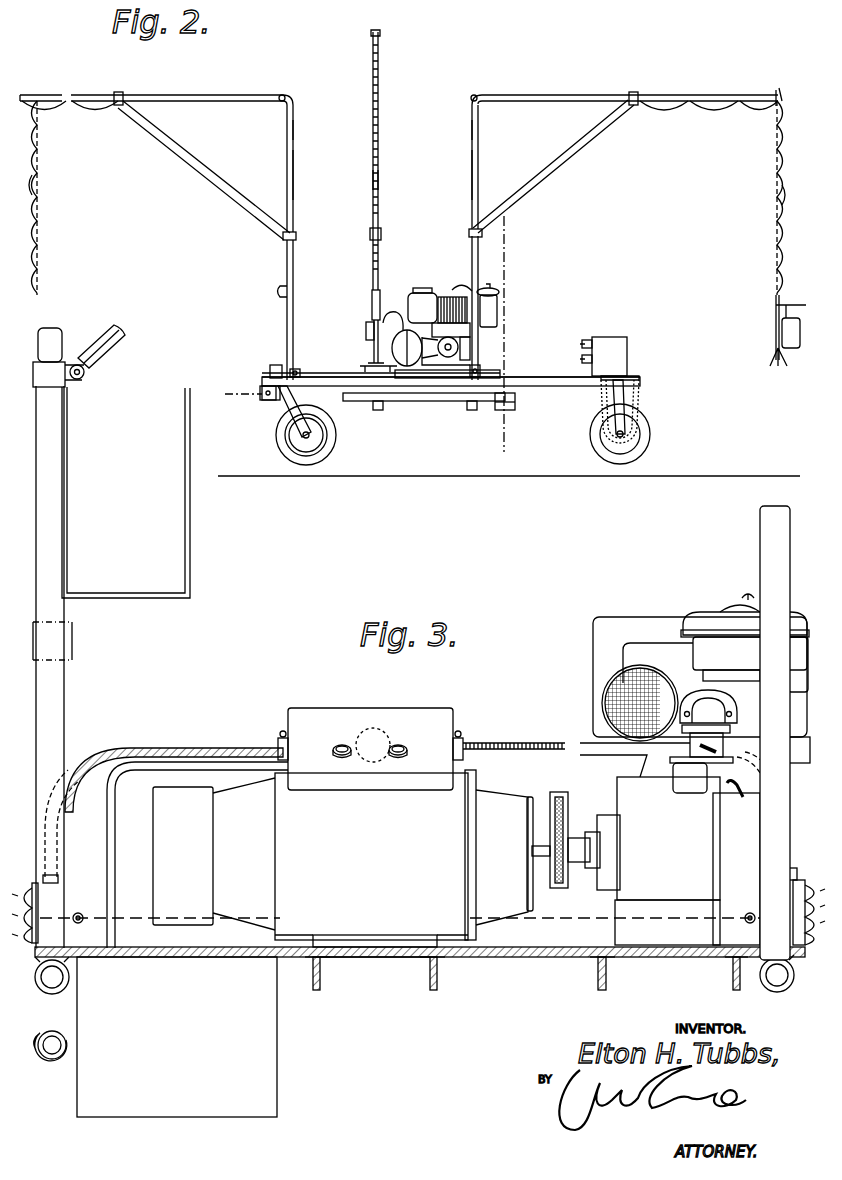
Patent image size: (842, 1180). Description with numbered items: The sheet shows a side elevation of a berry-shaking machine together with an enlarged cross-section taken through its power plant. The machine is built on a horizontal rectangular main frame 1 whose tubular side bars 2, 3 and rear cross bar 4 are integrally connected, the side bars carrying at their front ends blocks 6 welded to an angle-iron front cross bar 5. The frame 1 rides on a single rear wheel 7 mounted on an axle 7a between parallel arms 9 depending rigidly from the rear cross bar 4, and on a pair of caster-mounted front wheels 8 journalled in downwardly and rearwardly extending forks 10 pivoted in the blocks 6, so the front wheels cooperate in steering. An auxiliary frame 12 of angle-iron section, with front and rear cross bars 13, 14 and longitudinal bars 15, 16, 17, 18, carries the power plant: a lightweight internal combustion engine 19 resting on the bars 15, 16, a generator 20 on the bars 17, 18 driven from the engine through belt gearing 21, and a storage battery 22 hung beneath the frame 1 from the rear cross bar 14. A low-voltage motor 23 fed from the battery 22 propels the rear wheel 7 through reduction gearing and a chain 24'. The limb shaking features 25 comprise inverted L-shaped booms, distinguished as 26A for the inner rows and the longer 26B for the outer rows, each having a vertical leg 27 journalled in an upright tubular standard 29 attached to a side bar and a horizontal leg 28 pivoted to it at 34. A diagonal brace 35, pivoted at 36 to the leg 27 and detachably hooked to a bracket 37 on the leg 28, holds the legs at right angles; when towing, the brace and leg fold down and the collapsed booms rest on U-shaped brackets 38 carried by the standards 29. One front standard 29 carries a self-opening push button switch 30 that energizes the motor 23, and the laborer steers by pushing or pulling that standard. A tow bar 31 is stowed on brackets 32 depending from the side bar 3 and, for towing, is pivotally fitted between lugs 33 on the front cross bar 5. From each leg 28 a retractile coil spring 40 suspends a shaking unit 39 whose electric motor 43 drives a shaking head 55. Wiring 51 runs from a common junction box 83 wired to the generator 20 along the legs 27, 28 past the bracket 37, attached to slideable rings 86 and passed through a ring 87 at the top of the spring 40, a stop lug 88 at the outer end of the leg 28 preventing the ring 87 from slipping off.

In FIG. 2, the main frame 1 is at (524, 378).
In FIG. 3, the side bar 2 is at (777, 993).
In FIG. 2, the side bar 3 is at (508, 221).
In FIG. 3, the side bar 3 is at (70, 980).
In FIG. 2, the rear cross bar 4 is at (621, 377).
In FIG. 2, the front cross bar 5 is at (270, 383).
In FIG. 2, the block 6 is at (270, 374).
In FIG. 2, the rear wheel 7 is at (651, 430).
In FIG. 2, the axle 7a is at (624, 437).
In FIG. 2, the front wheel 8 is at (276, 458).
In FIG. 2, the arm 9 is at (640, 403).
In FIG. 2, the fork 10 is at (286, 426).
In FIG. 3, the auxiliary frame 12 is at (375, 979).
In FIG. 2, the front cross bar 13 is at (541, 378).
In FIG. 3, the front cross bar 13 is at (178, 958).
In FIG. 3, the rear cross bar 14 is at (523, 958).
In FIG. 3, the longitudinal bar 15 is at (733, 988).
In FIG. 3, the longitudinal bar 16 is at (606, 988).
In FIG. 3, the longitudinal bar 17 is at (431, 988).
In FIG. 3, the longitudinal bar 18 is at (320, 988).
In FIG. 2, the internal combustion engine 19 is at (440, 296).
In FIG. 3, the internal combustion engine 19 is at (658, 617).
In FIG. 2, the generator 20 is at (400, 345).
In FIG. 3, the generator 20 is at (404, 858).
In FIG. 2, the belt gearing 21 is at (422, 305).
In FIG. 3, the belt gearing 21 is at (558, 792).
In FIG. 2, the storage battery 22 is at (515, 405).
In FIG. 3, the storage battery 22 is at (177, 1037).
In FIG. 2, the motor 23 is at (617, 365).
In FIG. 2, the chain 24' is at (638, 403).
In FIG. 2, the limb shaking feature 25 is at (294, 133).
In FIG. 2, the boom 26A is at (294, 181).
In FIG. 2, the boom 26B is at (378, 181).
In FIG. 2, the vertical leg 27 is at (287, 160).
In FIG. 3, the vertical leg 27 is at (58, 332).
In FIG. 2, the horizontal leg 28 is at (253, 95).
In FIG. 2, the tubular standard 29 is at (287, 319).
In FIG. 3, the tubular standard 29 is at (50, 696).
In FIG. 2, the push button switch 30 is at (279, 291).
In FIG. 3, the push button switch 30 is at (72, 641).
In FIG. 2, the tow bar 31 is at (233, 402).
In FIG. 3, the tow bar 31 is at (50, 1032).
In FIG. 2, the bracket 32 is at (378, 410).
In FIG. 3, the bracket 32 is at (52, 1060).
In FIG. 2, the lug 33 is at (268, 401).
In FIG. 2, the pivot 34 is at (282, 94).
In FIG. 2, the diagonal brace 35 is at (218, 183).
In FIG. 3, the diagonal brace 35 is at (116, 333).
In FIG. 2, the pivot 36 is at (284, 241).
In FIG. 3, the pivot 36 is at (80, 380).
In FIG. 2, the bracket 37 is at (119, 92).
In FIG. 3, the U-shaped bracket 38 is at (186, 512).
In FIG. 2, the shaking unit 39 is at (372, 319).
In FIG. 2, the retractile coil spring 40 is at (38, 158).
In FIG. 2, the motor 43 is at (785, 338).
In FIG. 2, the wiring 51 is at (36, 176).
In FIG. 3, the wiring 51 is at (38, 912).
In FIG. 2, the shaking head 55 is at (375, 368).
In FIG. 2, the common junction box 83 is at (396, 320).
In FIG. 3, the common junction box 83 is at (370, 725).
In FIG. 2, the ring 86 is at (68, 95).
In FIG. 2, the ring 87 is at (777, 92).
In FIG. 2, the stop lug 88 is at (783, 93).